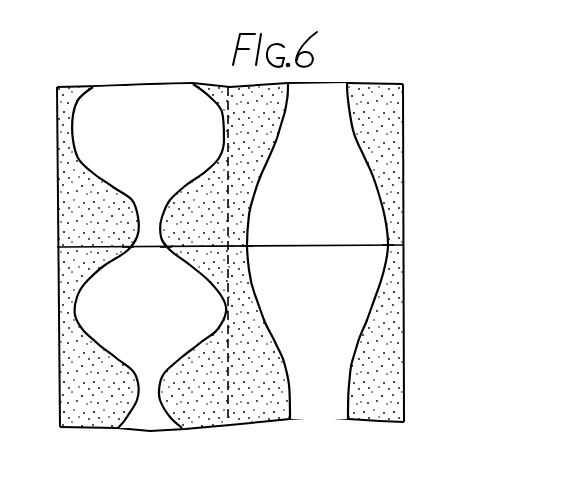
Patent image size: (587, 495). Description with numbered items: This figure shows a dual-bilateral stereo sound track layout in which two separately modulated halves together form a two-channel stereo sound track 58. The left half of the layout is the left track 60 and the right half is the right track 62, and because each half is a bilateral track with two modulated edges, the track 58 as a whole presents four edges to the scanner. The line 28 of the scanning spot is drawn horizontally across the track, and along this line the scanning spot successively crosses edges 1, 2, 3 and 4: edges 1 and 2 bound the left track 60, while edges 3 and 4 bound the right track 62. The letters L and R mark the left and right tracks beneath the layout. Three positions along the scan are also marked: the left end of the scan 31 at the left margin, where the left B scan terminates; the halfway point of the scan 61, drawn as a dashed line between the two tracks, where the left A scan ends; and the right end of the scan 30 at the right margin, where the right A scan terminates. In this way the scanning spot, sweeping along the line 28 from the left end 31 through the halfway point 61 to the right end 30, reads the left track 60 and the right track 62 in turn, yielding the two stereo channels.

The two-channel stereo sound track 58 is at (406, 131).
The left track 60 is at (142, 113).
The line of the scanning spot 28 is at (299, 247).
The right track 62 is at (365, 205).
The halfway point of scan 61 is at (228, 408).
The right end of scan 30 is at (405, 370).
The left end of scan 31 is at (60, 376).
The first track edge 1 is at (125, 259).
The second track edge 2 is at (167, 259).
The third track edge 3 is at (252, 258).
The fourth track edge 4 is at (380, 258).
The left channel L is at (149, 448).
The right channel R is at (330, 443).